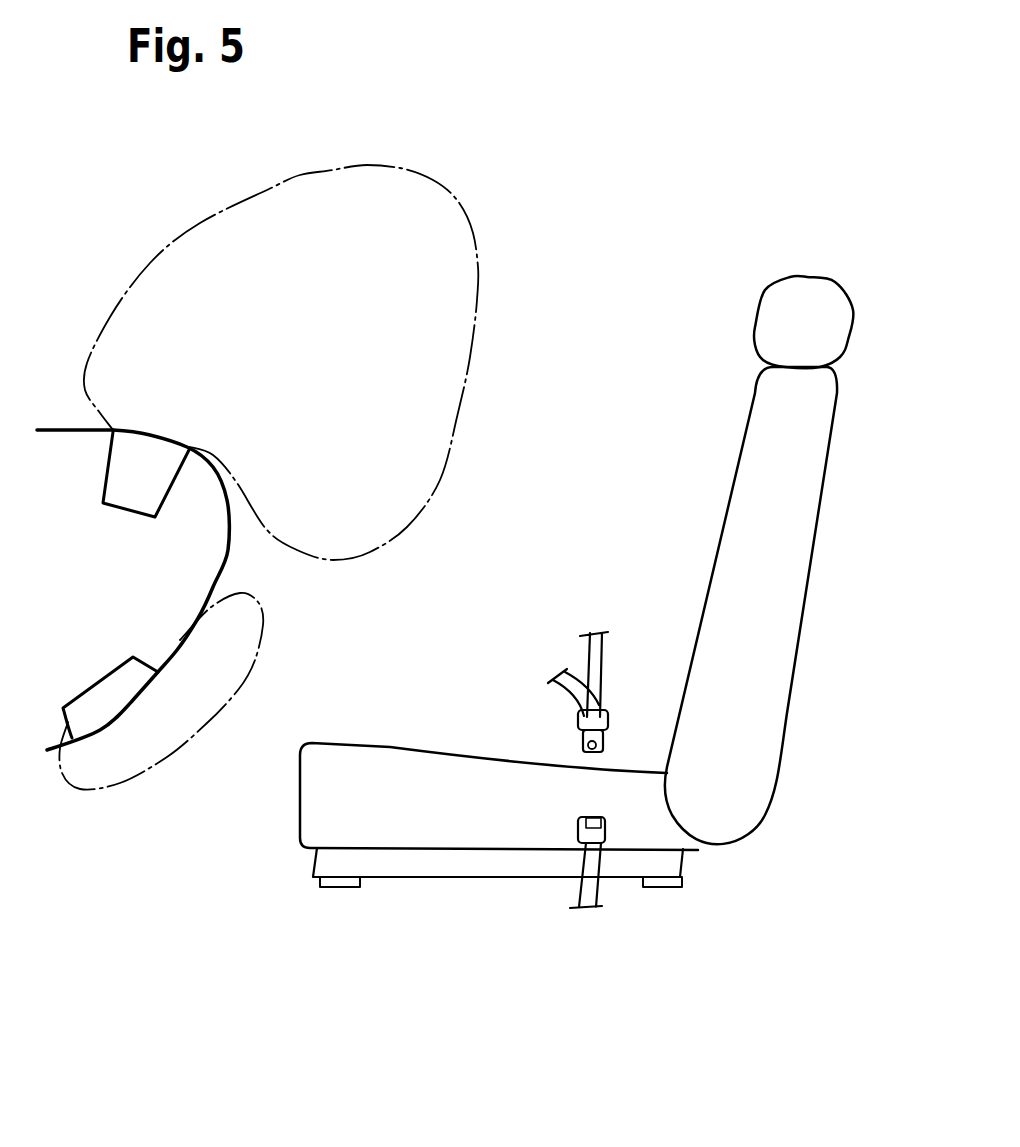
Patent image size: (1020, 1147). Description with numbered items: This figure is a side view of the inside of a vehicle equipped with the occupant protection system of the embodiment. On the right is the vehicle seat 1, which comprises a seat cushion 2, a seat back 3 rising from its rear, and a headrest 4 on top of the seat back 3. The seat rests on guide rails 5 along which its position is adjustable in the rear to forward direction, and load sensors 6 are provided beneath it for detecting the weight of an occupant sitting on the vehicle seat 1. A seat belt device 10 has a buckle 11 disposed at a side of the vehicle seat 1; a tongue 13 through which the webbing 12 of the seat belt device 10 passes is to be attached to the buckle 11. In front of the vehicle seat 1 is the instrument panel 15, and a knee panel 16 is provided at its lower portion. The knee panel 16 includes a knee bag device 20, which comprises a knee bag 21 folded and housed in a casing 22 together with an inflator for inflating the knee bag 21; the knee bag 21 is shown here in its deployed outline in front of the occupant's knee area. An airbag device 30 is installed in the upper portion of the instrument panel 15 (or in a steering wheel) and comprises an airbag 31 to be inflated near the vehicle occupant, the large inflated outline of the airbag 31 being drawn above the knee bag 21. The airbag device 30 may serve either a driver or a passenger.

The vehicle seat 1 is at (585, 618).
The seat cushion 2 is at (520, 777).
The seat back 3 is at (720, 567).
The headrest 4 is at (770, 320).
The guide rails 5 is at (485, 872).
The load sensors 6 is at (657, 888).
The seat belt device 10 is at (591, 903).
The buckle 11 is at (607, 828).
The webbing 12 is at (602, 660).
The tongue 13 is at (608, 740).
The instrument panel 15 is at (63, 430).
The knee panel 16 is at (184, 650).
The knee bag device 20 is at (136, 693).
The knee bag 21 is at (213, 715).
The casing 22 is at (72, 698).
The airbag device 30 is at (107, 525).
The airbag 31 is at (470, 357).